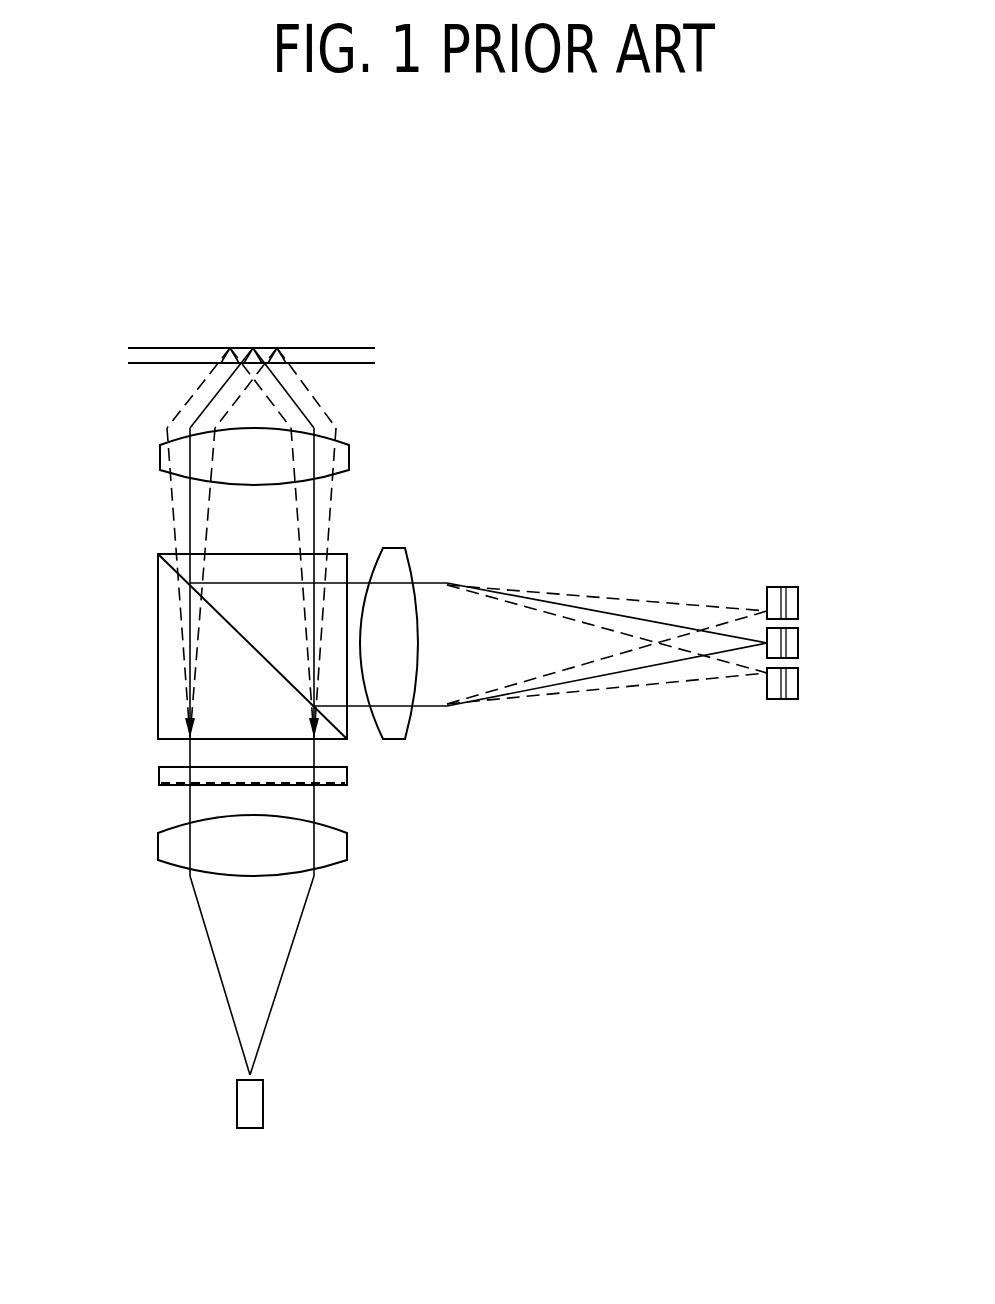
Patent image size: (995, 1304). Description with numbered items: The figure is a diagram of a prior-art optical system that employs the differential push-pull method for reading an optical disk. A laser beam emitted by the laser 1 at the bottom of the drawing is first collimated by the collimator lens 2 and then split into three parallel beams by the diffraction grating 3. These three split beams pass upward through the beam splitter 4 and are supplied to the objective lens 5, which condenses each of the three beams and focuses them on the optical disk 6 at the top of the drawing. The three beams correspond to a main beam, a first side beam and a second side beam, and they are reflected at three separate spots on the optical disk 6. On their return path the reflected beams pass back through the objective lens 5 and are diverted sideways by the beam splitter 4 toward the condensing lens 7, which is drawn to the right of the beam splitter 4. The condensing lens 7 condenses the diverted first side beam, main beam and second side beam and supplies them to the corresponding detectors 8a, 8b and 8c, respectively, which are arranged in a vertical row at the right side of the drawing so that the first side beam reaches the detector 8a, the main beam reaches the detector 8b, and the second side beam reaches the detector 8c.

The laser 1 is at (255, 1110).
The collimator lens 2 is at (330, 848).
The diffraction grating 3 is at (345, 773).
The beam splitter 4 is at (158, 706).
The objective lens 5 is at (160, 462).
The optical disk 6 is at (173, 356).
The condensing lens 7 is at (393, 548).
The detector 8a is at (798, 600).
The detector 8b is at (790, 643).
The detector 8c is at (790, 685).